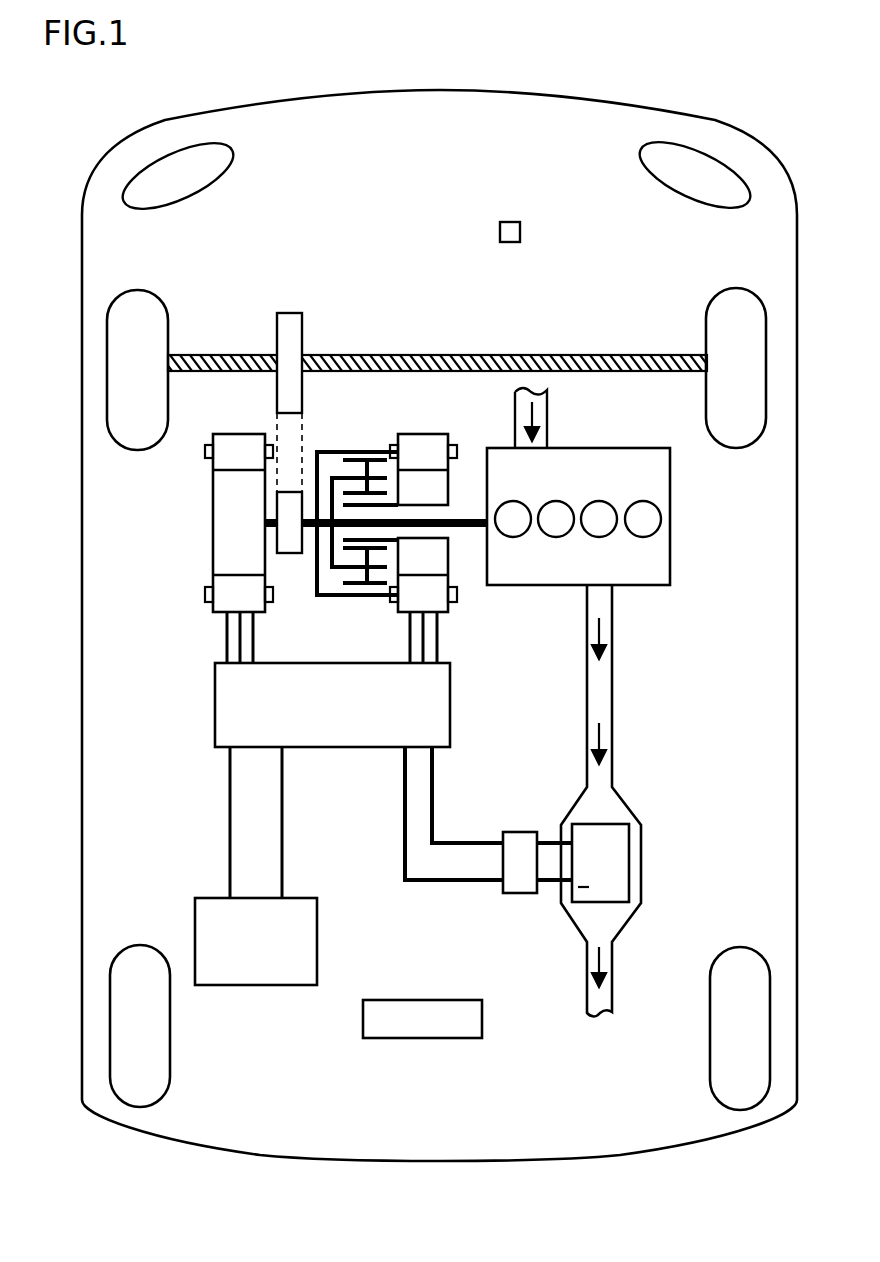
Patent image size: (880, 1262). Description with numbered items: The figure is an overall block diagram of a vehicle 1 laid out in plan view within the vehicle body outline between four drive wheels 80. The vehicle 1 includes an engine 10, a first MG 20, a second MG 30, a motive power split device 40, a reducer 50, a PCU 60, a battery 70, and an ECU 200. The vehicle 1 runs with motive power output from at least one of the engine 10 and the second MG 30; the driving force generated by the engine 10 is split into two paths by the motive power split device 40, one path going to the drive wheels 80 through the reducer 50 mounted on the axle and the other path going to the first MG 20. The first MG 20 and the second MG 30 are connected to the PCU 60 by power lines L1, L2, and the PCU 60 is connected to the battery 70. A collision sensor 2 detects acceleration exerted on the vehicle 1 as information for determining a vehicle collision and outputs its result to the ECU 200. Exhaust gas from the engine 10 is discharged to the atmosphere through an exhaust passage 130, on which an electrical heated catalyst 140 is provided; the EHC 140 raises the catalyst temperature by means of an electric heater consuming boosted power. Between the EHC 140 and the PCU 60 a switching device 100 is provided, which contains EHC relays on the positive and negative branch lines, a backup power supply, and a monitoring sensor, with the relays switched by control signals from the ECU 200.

The vehicle 1 is at (427, 73).
The collision sensor 2 is at (510, 222).
The engine 10 is at (608, 448).
The first MG 20 is at (421, 434).
The second MG 30 is at (237, 434).
The motive power split device 40 is at (352, 450).
The reducer 50 is at (289, 313).
The power control unit (PCU) 60 is at (215, 700).
The battery 70 is at (320, 940).
The drive wheels 80 is at (134, 289).
The switching device 100 is at (521, 832).
The exhaust passage 130 is at (612, 745).
The electrical heated catalyst (EHC) 140 is at (629, 862).
The electronic control unit (ECU) 200 is at (422, 1040).
The power line L1 is at (438, 627).
The power line L2 is at (258, 629).